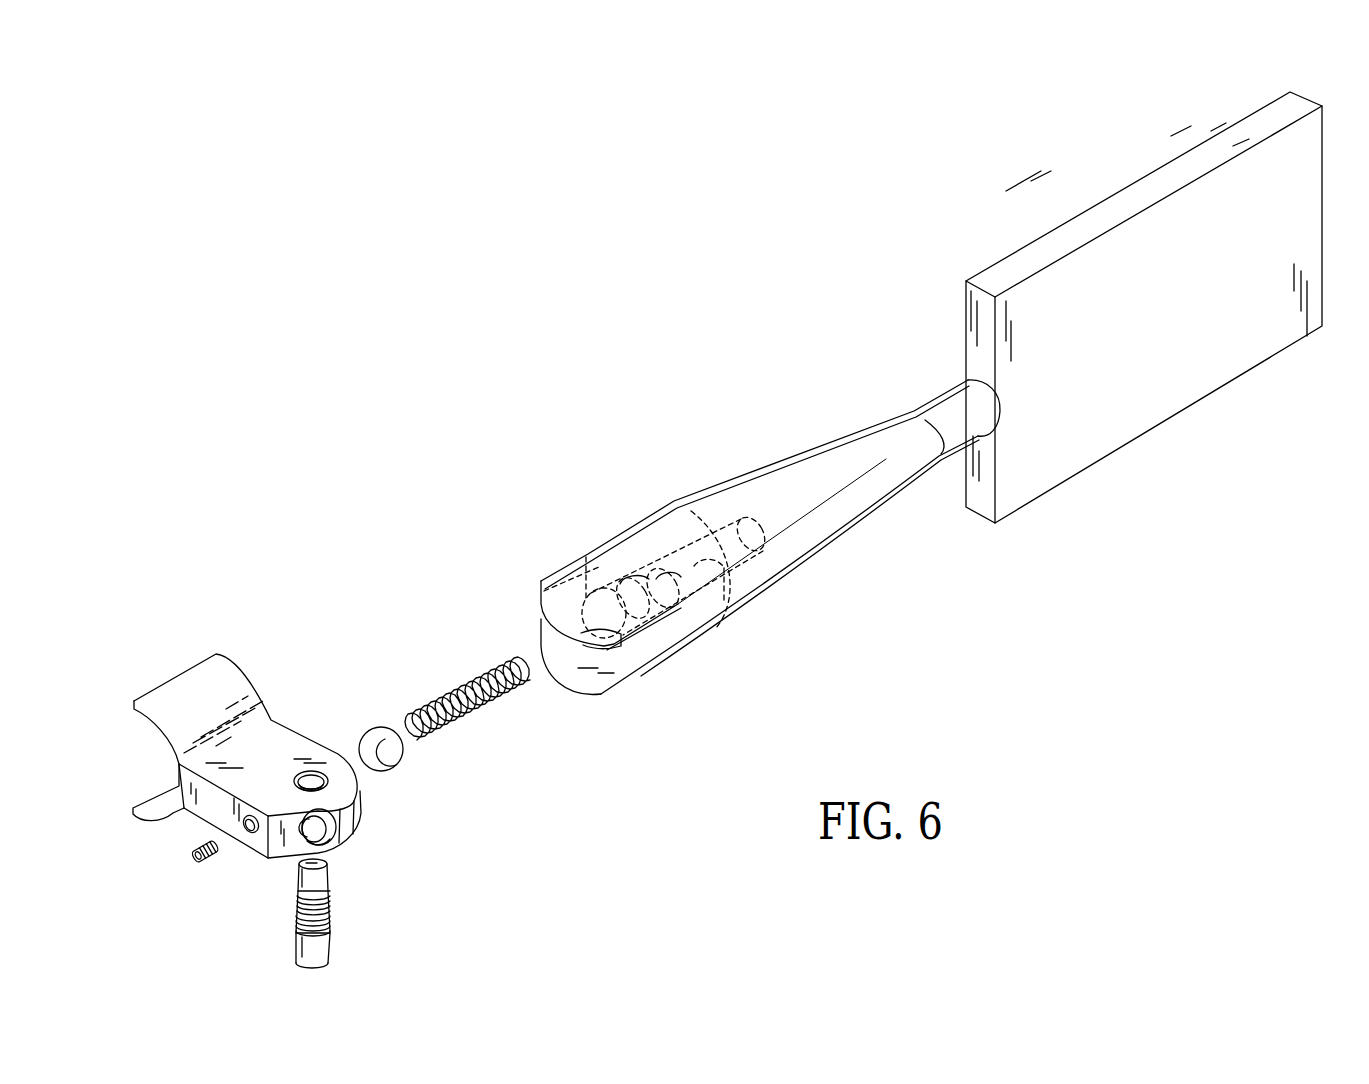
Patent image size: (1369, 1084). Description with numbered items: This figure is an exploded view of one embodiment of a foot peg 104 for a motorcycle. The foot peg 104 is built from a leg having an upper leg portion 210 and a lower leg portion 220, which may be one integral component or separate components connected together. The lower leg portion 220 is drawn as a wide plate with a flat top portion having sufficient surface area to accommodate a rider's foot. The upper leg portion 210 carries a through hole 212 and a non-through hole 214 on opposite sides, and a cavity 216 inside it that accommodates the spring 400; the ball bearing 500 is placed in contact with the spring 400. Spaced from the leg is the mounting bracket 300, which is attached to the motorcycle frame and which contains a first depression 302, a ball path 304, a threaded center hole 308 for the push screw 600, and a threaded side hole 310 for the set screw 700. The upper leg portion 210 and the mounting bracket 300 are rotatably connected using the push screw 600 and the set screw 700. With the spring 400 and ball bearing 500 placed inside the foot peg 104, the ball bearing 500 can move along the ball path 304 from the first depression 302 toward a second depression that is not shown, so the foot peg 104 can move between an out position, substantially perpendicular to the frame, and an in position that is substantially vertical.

The foot peg 104 is at (688, 355).
The upper leg portion 210 is at (570, 548).
The through hole 212 is at (677, 603).
The non-through hole 214 is at (657, 657).
The cavity 216 is at (727, 622).
The lower leg portion 220 is at (1174, 418).
The mounting bracket 300 is at (288, 650).
The first depression 302 is at (338, 836).
The ball path 304 is at (350, 812).
The threaded center hole 308 is at (310, 770).
The threaded side hole 310 is at (246, 834).
The spring 400 is at (483, 707).
The ball bearing 500 is at (393, 767).
The push screw 600 is at (330, 940).
The set screw 700 is at (210, 860).